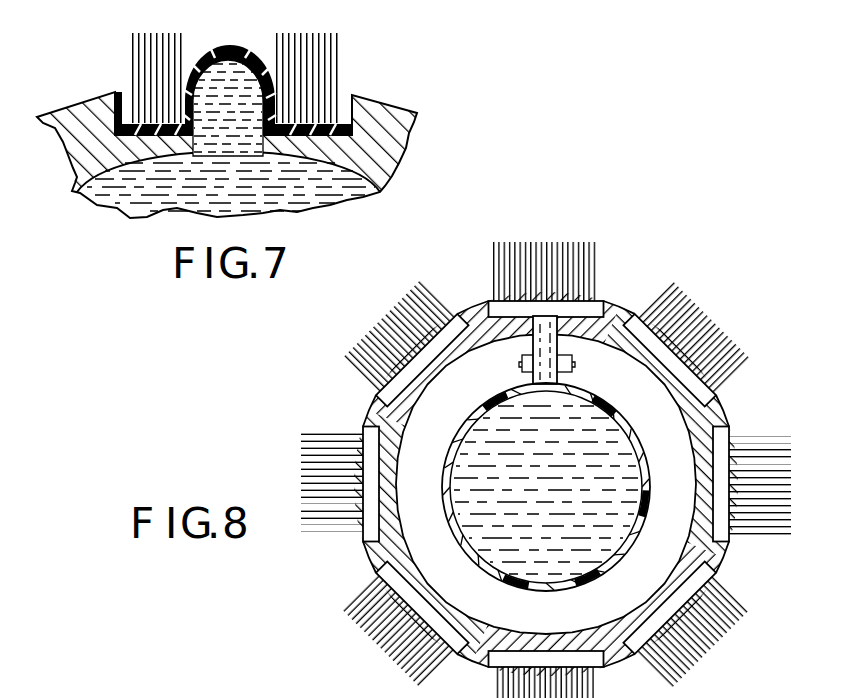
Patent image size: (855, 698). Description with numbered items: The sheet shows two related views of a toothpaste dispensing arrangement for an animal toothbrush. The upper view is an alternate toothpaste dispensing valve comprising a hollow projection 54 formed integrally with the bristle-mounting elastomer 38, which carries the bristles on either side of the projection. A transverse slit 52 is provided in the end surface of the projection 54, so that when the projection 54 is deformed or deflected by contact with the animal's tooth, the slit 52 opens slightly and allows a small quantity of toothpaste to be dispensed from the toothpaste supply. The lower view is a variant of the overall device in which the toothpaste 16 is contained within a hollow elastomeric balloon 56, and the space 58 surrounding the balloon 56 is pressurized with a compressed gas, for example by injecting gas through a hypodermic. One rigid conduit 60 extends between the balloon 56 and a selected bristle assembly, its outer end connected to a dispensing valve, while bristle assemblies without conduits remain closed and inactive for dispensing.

In FIG. 8, the toothpaste 16 is at (528, 490).
In FIG. 7, the bristle-mounting elastomer 38 is at (346, 112).
In FIG. 7, the transverse slit 52 is at (233, 45).
In FIG. 7, the hollow projection 54 is at (212, 46).
In FIG. 8, the hollow elastomeric balloon 56 is at (531, 487).
In FIG. 8, the space 58 is at (525, 484).
In FIG. 8, the rigid conduit 60 is at (527, 350).